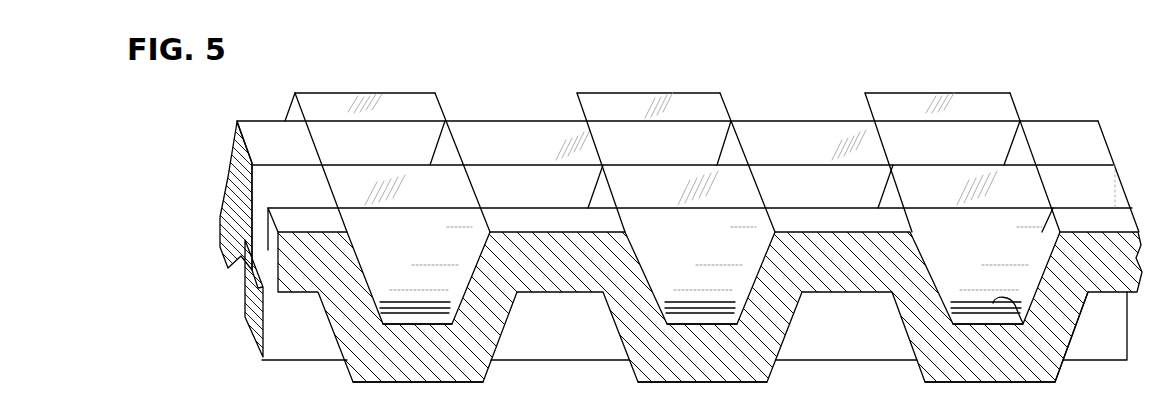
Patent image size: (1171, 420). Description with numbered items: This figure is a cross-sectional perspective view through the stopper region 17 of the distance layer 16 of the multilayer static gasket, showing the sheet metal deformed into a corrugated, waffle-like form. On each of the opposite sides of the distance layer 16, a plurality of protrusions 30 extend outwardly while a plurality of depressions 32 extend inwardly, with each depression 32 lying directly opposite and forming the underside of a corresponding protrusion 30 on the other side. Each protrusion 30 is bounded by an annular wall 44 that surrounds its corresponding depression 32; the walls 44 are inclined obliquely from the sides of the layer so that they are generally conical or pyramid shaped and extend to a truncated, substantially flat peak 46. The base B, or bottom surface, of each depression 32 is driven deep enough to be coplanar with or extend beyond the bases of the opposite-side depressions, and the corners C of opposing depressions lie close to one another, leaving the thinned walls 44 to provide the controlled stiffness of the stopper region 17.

The distance layer 16 is at (1038, 121).
The stopper region 17 is at (253, 328).
The protrusion 30 is at (563, 223).
The depression 32 is at (417, 136).
The annular wall 44 is at (463, 280).
The peak 46 is at (410, 189).
The base B is at (1048, 350).
The corner C is at (310, 188).